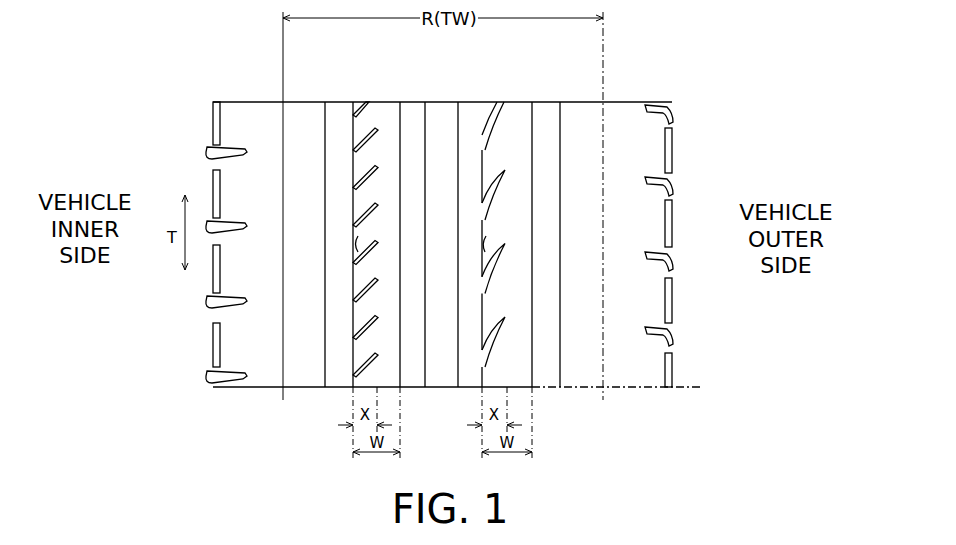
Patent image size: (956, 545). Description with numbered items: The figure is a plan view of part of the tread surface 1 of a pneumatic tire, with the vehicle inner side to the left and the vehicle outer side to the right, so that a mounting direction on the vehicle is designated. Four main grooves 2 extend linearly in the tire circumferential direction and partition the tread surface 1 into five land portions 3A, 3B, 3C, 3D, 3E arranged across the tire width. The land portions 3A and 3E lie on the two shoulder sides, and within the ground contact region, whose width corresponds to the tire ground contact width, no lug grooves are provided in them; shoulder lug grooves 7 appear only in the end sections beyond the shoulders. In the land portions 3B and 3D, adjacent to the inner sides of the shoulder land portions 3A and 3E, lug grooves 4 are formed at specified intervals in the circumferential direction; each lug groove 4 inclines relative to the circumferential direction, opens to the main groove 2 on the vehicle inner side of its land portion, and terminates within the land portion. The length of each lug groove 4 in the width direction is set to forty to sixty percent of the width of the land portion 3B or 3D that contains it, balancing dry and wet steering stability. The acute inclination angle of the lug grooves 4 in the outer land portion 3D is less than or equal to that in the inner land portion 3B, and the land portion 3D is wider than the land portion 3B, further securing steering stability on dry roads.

The tread surface 1 is at (653, 62).
The main grooves 2 is at (340, 108).
The land portion 3A is at (325, 100).
The land portion 3B is at (400, 100).
The land portion 3C is at (458, 100).
The land portion 3D is at (482, 100).
The land portion 3E is at (560, 100).
The lug grooves 4 is at (372, 140).
The shoulder lug grooves 7 is at (206, 147).